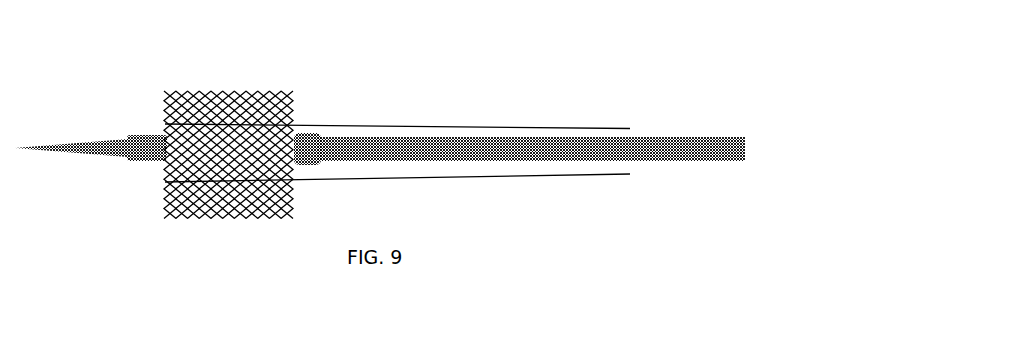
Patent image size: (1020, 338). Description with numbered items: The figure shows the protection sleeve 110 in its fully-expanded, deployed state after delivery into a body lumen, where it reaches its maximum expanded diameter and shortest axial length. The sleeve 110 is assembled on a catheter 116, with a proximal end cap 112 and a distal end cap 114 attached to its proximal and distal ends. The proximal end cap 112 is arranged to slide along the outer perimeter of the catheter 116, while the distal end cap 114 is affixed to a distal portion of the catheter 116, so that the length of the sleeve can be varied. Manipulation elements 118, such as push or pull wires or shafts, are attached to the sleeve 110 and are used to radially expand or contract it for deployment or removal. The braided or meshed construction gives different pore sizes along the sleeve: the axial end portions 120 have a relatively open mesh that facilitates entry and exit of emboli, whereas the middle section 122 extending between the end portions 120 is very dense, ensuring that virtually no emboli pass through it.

The protection sleeve 110 is at (233, 93).
The proximal end cap 112 is at (306, 140).
The distal end cap 114 is at (147, 137).
The catheter 116 is at (103, 140).
The manipulation elements 118 is at (443, 125).
The axial end portions 120 is at (167, 170).
The middle section 122 is at (220, 213).